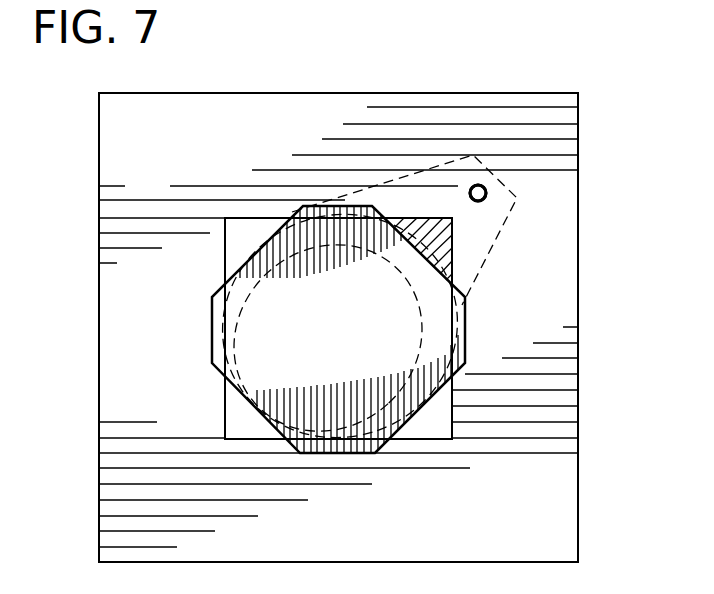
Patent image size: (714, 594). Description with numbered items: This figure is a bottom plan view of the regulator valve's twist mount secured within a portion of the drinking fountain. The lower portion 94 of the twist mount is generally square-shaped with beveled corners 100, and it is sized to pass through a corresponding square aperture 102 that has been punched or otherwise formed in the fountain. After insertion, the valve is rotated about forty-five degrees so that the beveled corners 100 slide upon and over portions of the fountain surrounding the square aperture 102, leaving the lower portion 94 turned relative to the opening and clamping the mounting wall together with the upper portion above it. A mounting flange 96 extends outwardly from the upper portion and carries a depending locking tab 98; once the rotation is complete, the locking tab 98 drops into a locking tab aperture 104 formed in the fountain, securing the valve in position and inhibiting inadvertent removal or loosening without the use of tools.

The lower portion 94 is at (283, 332).
The mounting flange 96 is at (483, 267).
The locking tab 98 is at (487, 190).
The beveled corners 100 is at (351, 206).
The square aperture 102 is at (248, 233).
The locking tab aperture 104 is at (487, 197).